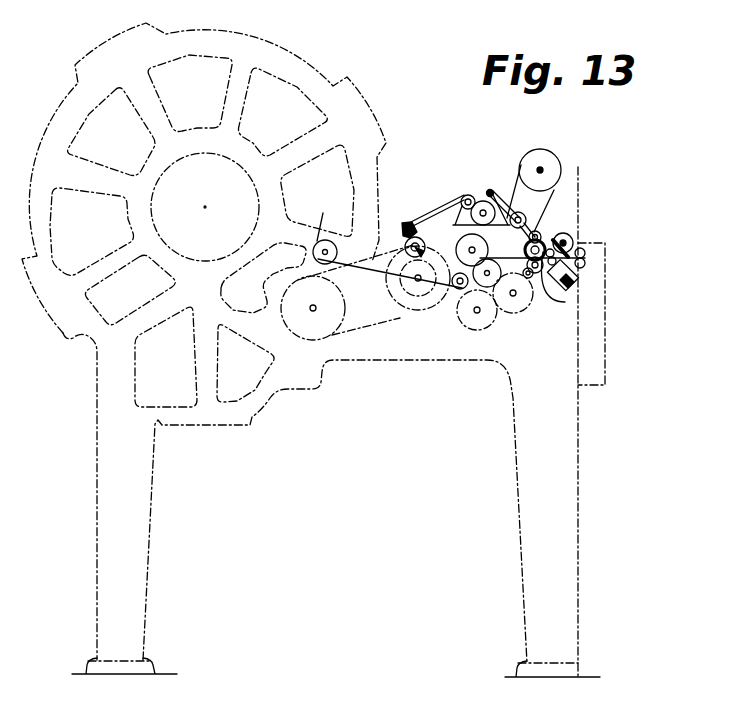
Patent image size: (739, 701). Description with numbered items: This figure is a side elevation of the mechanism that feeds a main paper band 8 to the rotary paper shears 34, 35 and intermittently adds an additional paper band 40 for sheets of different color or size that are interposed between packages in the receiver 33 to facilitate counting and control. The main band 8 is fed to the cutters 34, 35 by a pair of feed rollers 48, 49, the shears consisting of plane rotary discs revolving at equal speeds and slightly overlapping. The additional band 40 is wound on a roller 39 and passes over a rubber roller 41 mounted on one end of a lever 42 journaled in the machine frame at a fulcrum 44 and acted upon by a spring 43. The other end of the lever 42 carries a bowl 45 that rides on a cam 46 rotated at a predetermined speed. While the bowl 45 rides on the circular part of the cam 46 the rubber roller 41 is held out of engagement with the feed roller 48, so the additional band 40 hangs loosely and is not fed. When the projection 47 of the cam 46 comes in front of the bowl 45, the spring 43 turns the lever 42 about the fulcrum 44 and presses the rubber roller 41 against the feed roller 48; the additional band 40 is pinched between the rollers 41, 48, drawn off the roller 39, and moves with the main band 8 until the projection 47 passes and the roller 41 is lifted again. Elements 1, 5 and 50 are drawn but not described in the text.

The printing head 1 is at (590, 243).
The type carrier 5 is at (588, 268).
The main paper band 8 is at (508, 255).
The receiver 33 is at (607, 282).
The rotary paper shears 34 is at (436, 218).
The rotary paper shears 35 is at (497, 292).
The roller 39 is at (552, 160).
The additional paper band 40 is at (552, 225).
The rubber roller 41 is at (583, 247).
The lever 42 is at (548, 238).
The spring 43 is at (521, 165).
The fulcrum 44 is at (522, 215).
The bowl 45 is at (492, 192).
The cam 46 is at (452, 210).
The projection 47 is at (471, 195).
The feed roller 48 is at (569, 236).
The feed roller 49 is at (565, 302).
The pulley 50 is at (528, 246).